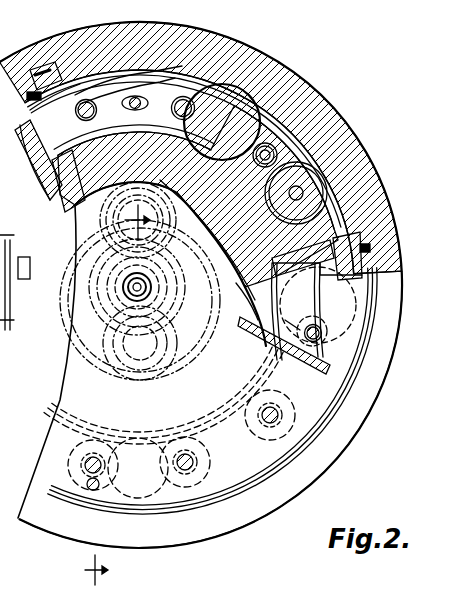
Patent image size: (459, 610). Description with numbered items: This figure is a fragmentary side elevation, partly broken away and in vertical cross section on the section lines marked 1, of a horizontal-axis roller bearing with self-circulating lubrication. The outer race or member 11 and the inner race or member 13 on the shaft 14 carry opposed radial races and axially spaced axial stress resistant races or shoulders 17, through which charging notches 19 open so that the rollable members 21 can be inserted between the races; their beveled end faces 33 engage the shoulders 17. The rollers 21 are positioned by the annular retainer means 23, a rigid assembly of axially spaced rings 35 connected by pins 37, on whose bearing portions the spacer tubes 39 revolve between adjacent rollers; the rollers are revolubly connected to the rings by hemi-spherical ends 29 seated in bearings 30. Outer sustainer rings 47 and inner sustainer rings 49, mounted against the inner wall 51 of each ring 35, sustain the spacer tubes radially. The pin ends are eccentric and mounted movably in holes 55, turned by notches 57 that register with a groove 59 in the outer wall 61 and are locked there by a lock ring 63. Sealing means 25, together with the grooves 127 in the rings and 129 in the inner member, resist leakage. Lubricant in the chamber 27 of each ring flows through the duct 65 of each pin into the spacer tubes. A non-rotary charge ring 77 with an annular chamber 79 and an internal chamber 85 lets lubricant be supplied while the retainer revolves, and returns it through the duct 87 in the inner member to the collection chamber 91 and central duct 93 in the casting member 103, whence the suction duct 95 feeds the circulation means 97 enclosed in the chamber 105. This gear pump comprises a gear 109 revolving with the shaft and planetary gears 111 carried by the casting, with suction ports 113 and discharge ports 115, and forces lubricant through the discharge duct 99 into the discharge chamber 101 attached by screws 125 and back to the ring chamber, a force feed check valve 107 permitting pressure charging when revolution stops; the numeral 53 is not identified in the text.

The section line 1 is at (110, 395).
The outer race or member 11 is at (355, 147).
The inner race or member 13 is at (198, 226).
The shaft 14 is at (207, 240).
The axial load stress resistant races or shoulders 17 is at (100, 95).
The charging notches 19 is at (173, 108).
The rollable radial and axial stress transmission members 21 is at (358, 170).
The annular retainer means 23 is at (352, 335).
The sealing means 25 is at (372, 247).
The lubricant means 27 is at (330, 310).
The hemi-spherical bearing ends 29 is at (145, 111).
The bearings 30 is at (134, 110).
The axial stress transmission faces 33 is at (330, 196).
The rings 35 is at (380, 273).
The pins 37 is at (304, 98).
The spacer tubes 39 is at (265, 64).
The outer sustainer rings 47 is at (280, 157).
The inner sustainer rings 49 is at (240, 262).
The inner wall 51 is at (24, 97).
The roller 53 is at (81, 110).
The holes 55 is at (219, 391).
The notches 57 is at (322, 335).
The groove 59 is at (317, 311).
The outer wall 61 is at (318, 305).
The lock ring 63 is at (289, 328).
The lubricant supply conduit or duct 65 is at (318, 124).
The non-rotary annular lubricant charge means 77 is at (51, 334).
The annular chamber 79 is at (30, 160).
The internal chamber 85 is at (38, 192).
The lubricant return duct 87 is at (197, 415).
The annular return collection chamber 91 is at (141, 395).
The central return duct 93 is at (122, 288).
The suction duct 95 is at (108, 413).
The fluid circulation means 97 is at (94, 287).
The discharge duct 99 is at (140, 300).
The annular lubricant discharge chamber 101 is at (284, 355).
The casting member 103 is at (141, 360).
The chamber 105 is at (84, 429).
The force feed check valve 107 is at (56, 268).
The gear 109 is at (85, 274).
The planetary gears 111 is at (123, 282).
The suction ports 113 is at (137, 309).
The discharge ports 115 is at (137, 280).
The screws 125 is at (93, 492).
The annular groove 127 is at (47, 73).
The annular groove 129 is at (128, 220).